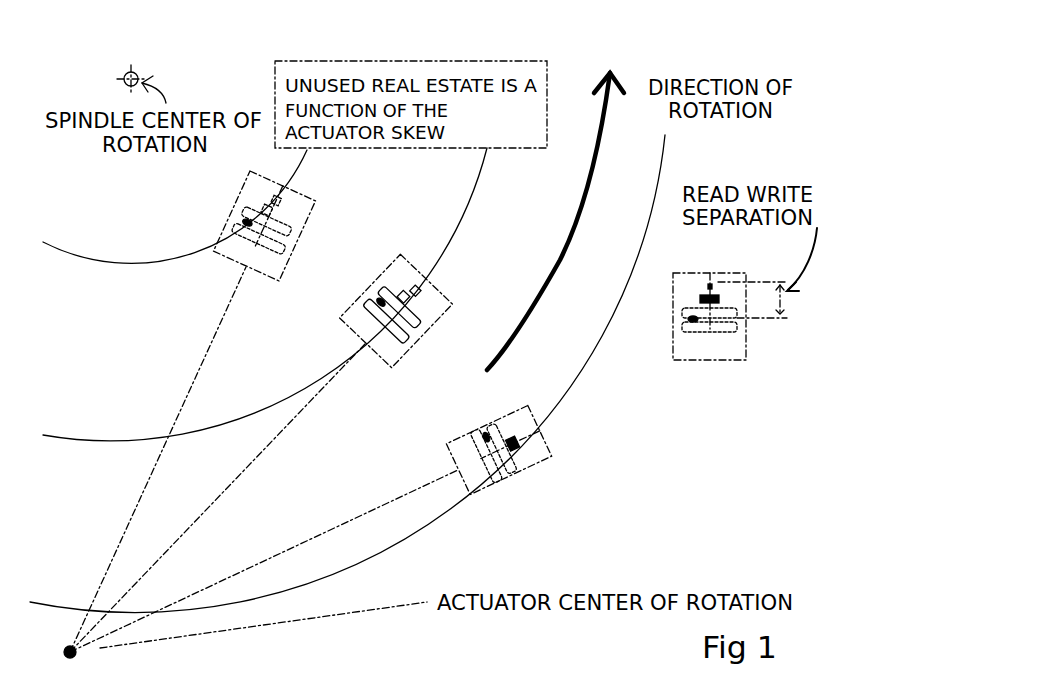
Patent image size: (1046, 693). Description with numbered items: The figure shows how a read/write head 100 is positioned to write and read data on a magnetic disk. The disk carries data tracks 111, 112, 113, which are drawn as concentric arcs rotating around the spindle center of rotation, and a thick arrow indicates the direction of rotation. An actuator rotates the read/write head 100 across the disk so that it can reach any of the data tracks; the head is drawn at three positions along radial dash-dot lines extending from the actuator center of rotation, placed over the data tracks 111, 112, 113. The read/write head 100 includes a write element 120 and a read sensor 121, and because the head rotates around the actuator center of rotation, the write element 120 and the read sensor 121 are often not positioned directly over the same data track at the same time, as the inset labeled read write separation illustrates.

The read/write head 100 is at (233, 208).
The data track 111 is at (118, 263).
The data track 112 is at (122, 442).
The data track 113 is at (366, 555).
The write element 120 is at (278, 200).
The read sensor 121 is at (243, 226).